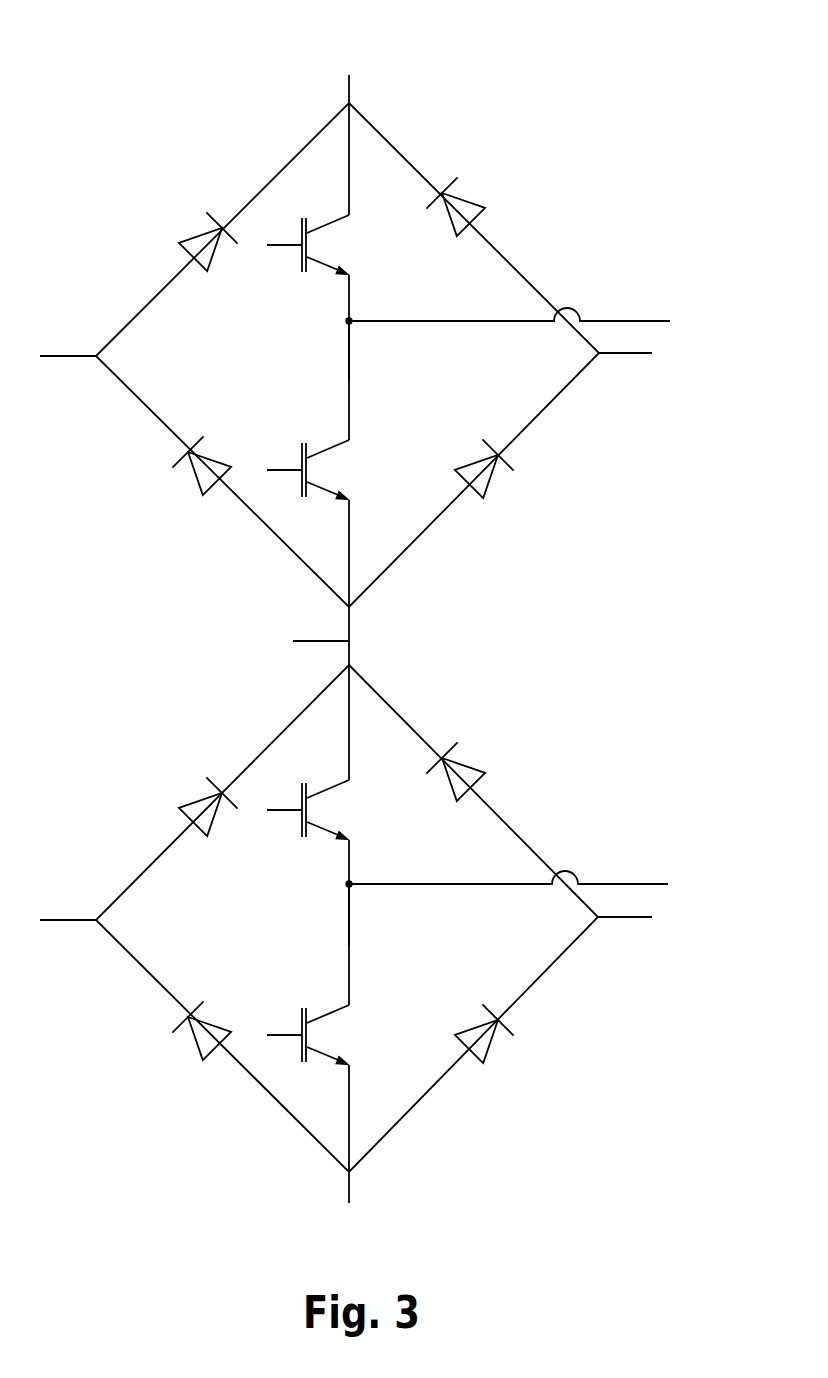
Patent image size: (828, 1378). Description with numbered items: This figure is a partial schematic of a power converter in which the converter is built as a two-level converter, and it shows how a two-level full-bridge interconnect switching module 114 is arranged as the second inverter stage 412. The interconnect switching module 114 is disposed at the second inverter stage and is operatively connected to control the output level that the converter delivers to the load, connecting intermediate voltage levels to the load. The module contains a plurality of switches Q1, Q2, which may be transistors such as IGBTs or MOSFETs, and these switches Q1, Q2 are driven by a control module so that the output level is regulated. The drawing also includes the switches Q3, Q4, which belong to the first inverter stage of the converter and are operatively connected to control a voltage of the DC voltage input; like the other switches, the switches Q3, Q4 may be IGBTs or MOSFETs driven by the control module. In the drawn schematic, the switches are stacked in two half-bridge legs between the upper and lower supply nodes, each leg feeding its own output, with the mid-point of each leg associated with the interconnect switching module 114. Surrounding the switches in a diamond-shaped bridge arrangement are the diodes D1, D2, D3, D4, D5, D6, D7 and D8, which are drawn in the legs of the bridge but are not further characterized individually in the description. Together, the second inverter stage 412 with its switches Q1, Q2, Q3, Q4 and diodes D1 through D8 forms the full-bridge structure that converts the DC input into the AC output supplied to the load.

The second inverter stage 412 is at (95, 96).
The interconnect switching module 114 is at (318, 356).
The switch Q1 is at (323, 244).
The switch Q2 is at (323, 469).
The switch Q3 is at (323, 809).
The switch Q4 is at (323, 1034).
The diode D1 is at (206, 240).
The diode D2 is at (196, 472).
The diode D3 is at (461, 203).
The diode D4 is at (496, 480).
The diode D5 is at (206, 804).
The diode D6 is at (196, 1037).
The diode D7 is at (461, 767).
The diode D8 is at (496, 1045).